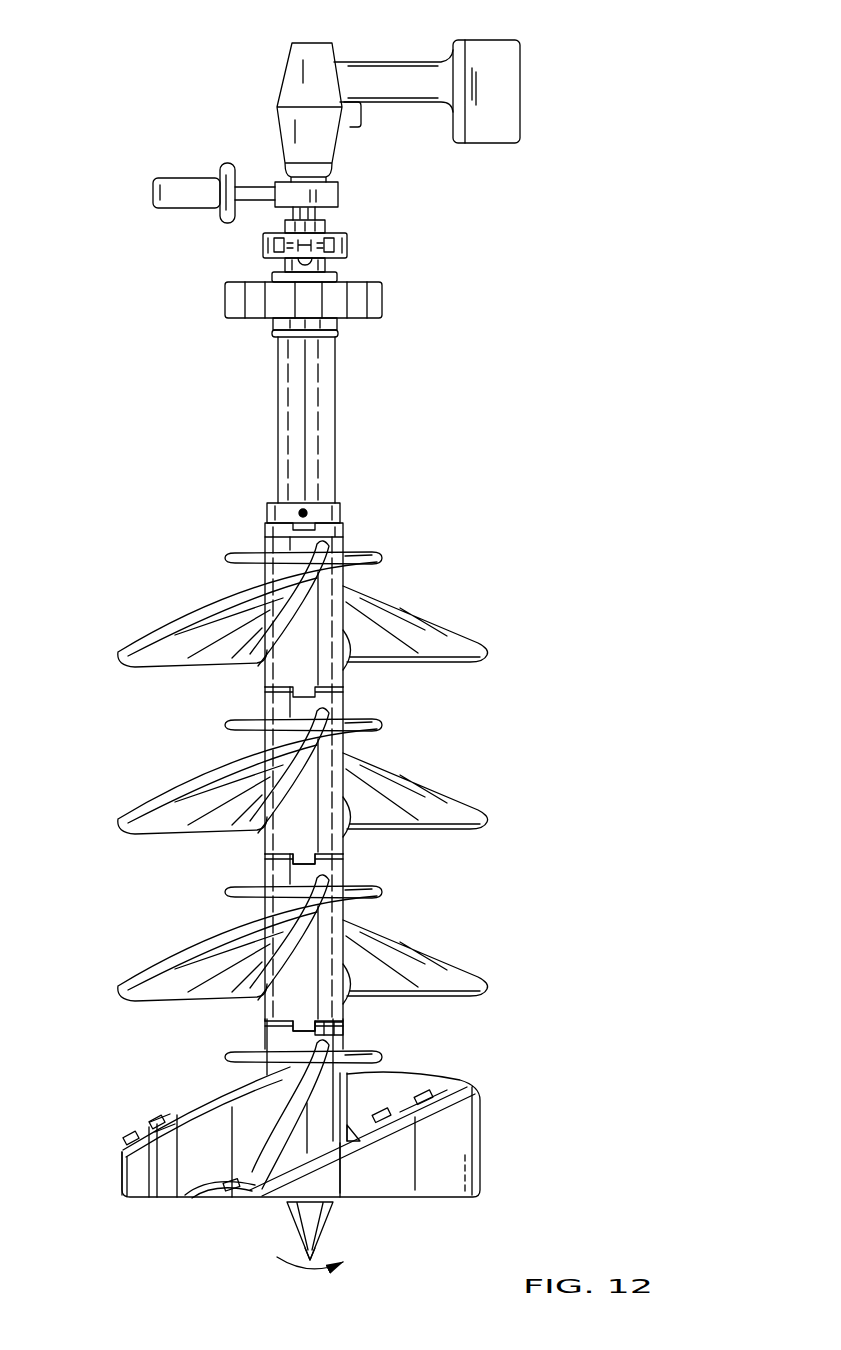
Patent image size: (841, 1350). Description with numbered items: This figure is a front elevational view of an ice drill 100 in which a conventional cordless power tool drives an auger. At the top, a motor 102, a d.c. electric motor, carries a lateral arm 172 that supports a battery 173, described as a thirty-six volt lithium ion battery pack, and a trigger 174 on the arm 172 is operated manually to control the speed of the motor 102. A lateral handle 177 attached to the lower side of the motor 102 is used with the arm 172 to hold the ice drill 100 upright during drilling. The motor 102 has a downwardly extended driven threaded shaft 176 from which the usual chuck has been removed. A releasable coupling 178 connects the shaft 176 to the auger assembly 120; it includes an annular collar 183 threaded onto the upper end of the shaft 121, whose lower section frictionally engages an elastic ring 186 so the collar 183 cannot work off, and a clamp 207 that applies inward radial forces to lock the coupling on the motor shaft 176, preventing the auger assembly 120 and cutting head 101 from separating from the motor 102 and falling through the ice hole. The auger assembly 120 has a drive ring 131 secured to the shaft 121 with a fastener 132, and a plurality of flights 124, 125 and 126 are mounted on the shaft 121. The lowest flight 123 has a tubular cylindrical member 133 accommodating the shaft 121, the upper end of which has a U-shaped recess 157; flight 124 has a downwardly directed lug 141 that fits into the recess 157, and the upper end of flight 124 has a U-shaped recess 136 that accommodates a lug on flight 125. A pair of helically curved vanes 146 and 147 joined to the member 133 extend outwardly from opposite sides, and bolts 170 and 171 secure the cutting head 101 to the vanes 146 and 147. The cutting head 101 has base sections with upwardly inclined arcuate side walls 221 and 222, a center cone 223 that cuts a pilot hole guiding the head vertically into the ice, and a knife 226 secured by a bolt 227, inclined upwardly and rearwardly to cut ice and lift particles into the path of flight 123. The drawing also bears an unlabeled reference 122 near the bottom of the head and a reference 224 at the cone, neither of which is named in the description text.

The ice drill 100 is at (497, 418).
The cutting head 101 is at (519, 1133).
The motor 102 is at (244, 98).
The auger assembly 120 is at (518, 641).
The shaft 121 is at (325, 438).
The direction of rotation 122 is at (351, 1274).
The flight 123 is at (478, 1050).
The flight 124 is at (456, 915).
The flight 125 is at (441, 758).
The flight 126 is at (433, 596).
The drive ring 131 is at (339, 513).
The fastener 132 is at (300, 508).
The tubular cylindrical member 133 is at (287, 1080).
The U-shaped recess 136 is at (301, 875).
The lug 141 is at (298, 1022).
The helically curved vane 146 is at (198, 1110).
The helically curved vane 147 is at (437, 1082).
The U-shaped recess 157 is at (346, 1034).
The bolt 170 is at (128, 1130).
The bolt 171 is at (433, 1098).
The lateral arm 172 is at (389, 58).
The battery 173 is at (506, 82).
The trigger 174 is at (349, 122).
The driven threaded shaft 176 is at (316, 210).
The lateral handle 177 is at (173, 183).
The releasable coupling 178 is at (207, 271).
The annular collar 183 is at (375, 302).
The elastic ring 186 is at (271, 336).
The clamp 207 is at (346, 249).
The arcuate side wall 221 is at (133, 1186).
The arcuate side wall 222 is at (465, 1170).
The center cone 223 is at (290, 1230).
The pilot point 224 is at (318, 1228).
The knife 226 is at (208, 1200).
The bolt 227 is at (175, 1195).